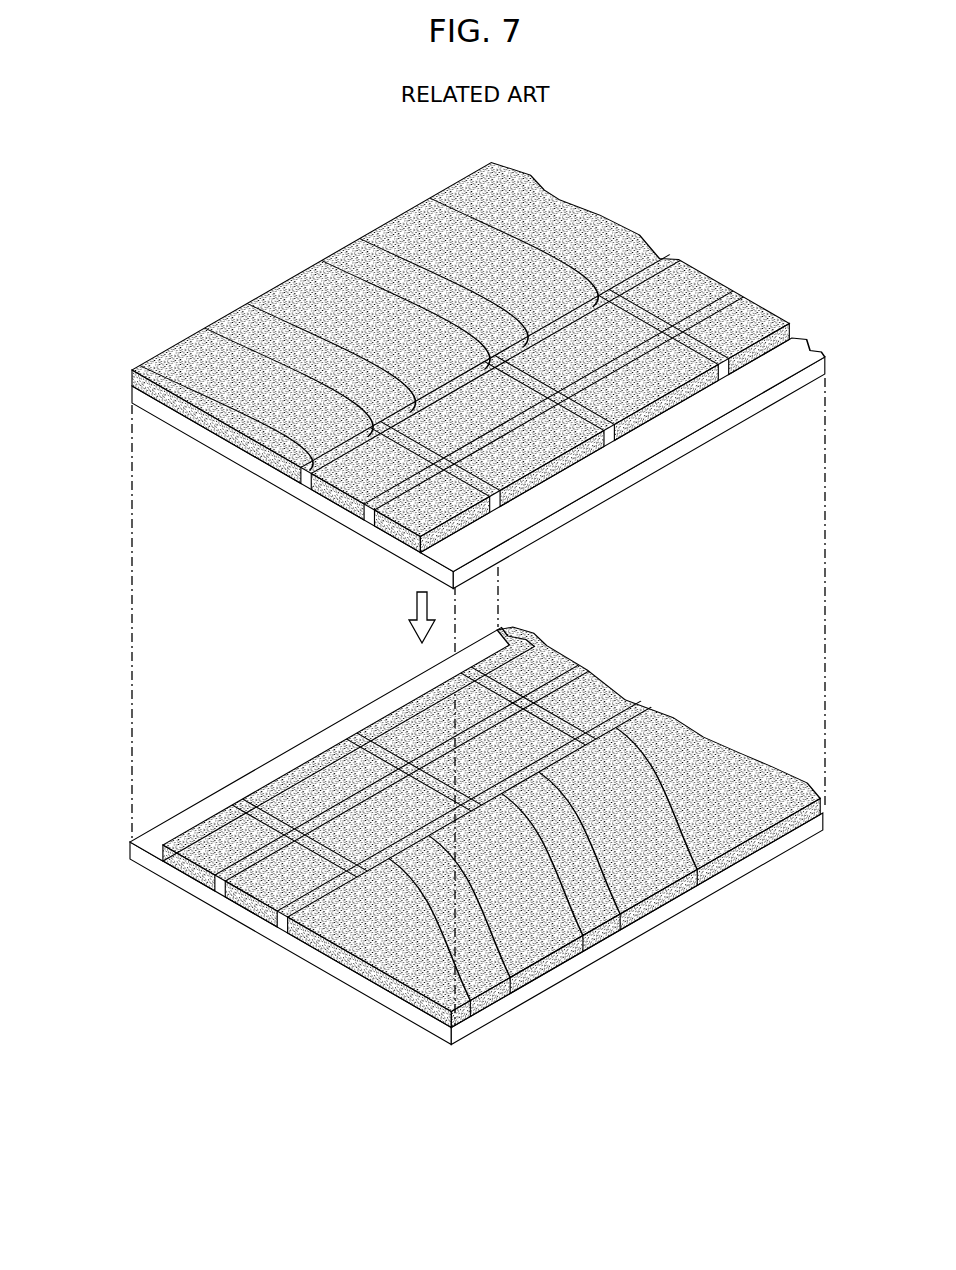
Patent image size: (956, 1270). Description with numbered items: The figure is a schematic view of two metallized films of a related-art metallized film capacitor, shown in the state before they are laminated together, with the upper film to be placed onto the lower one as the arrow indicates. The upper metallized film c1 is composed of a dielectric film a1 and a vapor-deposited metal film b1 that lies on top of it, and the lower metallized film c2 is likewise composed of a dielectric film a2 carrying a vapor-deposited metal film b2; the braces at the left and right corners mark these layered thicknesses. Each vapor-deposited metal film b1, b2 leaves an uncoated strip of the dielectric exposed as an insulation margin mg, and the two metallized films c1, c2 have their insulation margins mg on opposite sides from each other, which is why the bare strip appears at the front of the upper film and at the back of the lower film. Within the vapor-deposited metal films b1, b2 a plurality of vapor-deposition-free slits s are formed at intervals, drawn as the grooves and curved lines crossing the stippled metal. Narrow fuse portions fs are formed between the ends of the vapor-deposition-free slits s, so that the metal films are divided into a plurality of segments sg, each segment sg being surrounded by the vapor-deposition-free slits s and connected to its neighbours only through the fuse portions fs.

The fuse portion fs is at (465, 588).
The vapor-deposition-free slit s is at (457, 610).
The segment sg is at (476, 586).
The insulation margin mg is at (632, 453).
The dielectric film a1 is at (218, 440).
The vapor-deposited metal film b1 is at (172, 407).
The metallized film c1 is at (140, 472).
The dielectric film a2 is at (438, 1030).
The vapor-deposited metal film b2 is at (393, 997).
The metallized film c2 is at (360, 1062).